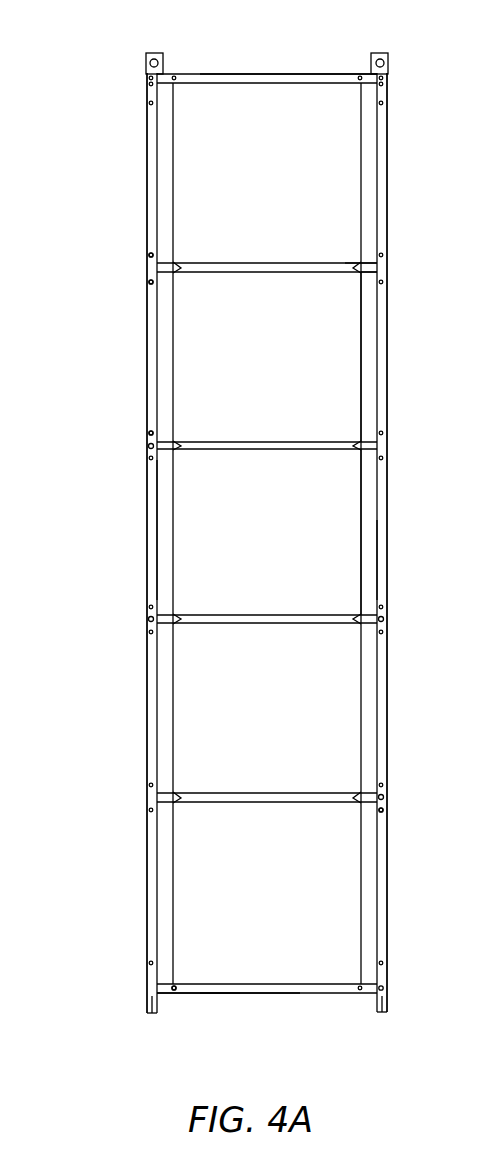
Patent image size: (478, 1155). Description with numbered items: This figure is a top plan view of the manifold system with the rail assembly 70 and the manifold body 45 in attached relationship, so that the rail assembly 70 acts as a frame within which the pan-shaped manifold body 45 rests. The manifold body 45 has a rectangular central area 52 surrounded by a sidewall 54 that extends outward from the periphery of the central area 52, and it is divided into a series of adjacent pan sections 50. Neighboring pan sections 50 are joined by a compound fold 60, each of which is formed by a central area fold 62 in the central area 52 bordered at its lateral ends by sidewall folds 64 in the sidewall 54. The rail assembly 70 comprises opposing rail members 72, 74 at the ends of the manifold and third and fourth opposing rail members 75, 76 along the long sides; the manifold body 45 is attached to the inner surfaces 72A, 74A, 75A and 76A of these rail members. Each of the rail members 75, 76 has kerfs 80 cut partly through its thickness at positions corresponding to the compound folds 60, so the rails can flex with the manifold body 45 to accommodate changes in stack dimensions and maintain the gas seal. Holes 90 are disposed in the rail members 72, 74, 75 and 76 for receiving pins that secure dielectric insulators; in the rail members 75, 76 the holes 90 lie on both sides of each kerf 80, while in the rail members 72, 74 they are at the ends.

The manifold body 45 is at (77, 144).
The pan sections 50 is at (250, 172).
The central area 52 is at (340, 364).
The sidewall 54 is at (365, 530).
The compound fold 60 is at (228, 618).
The central area fold 62 is at (343, 262).
The sidewall fold 64 is at (367, 274).
The rail assembly 70 is at (335, 74).
The rail member 72 is at (318, 993).
The inner surface 72A is at (205, 993).
The rail member 74 is at (225, 74).
The inner surface 74A is at (280, 74).
The rail member 75 is at (150, 672).
The inner surface 75A is at (157, 530).
The rail member 76 is at (385, 725).
The inner surface 76A is at (378, 575).
The kerfs 80 is at (150, 618).
The holes 90 is at (150, 436).